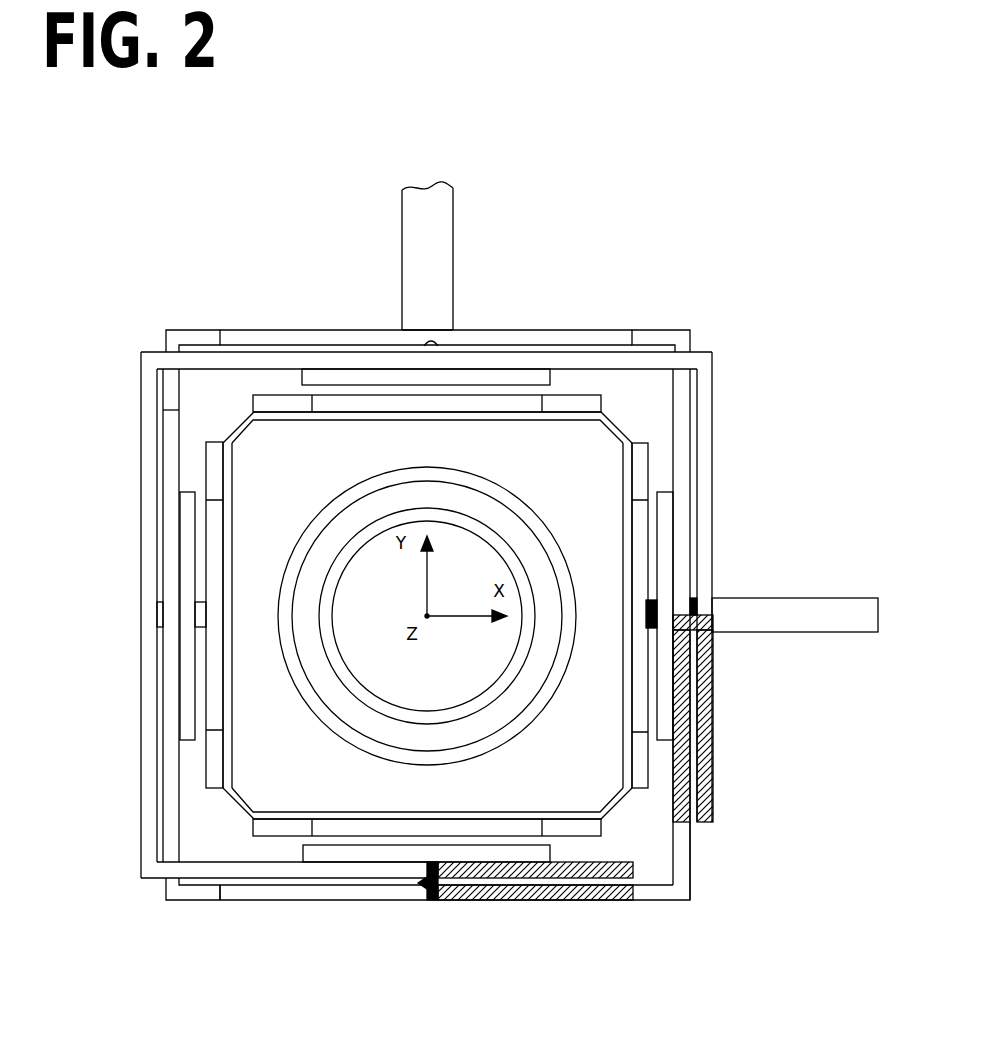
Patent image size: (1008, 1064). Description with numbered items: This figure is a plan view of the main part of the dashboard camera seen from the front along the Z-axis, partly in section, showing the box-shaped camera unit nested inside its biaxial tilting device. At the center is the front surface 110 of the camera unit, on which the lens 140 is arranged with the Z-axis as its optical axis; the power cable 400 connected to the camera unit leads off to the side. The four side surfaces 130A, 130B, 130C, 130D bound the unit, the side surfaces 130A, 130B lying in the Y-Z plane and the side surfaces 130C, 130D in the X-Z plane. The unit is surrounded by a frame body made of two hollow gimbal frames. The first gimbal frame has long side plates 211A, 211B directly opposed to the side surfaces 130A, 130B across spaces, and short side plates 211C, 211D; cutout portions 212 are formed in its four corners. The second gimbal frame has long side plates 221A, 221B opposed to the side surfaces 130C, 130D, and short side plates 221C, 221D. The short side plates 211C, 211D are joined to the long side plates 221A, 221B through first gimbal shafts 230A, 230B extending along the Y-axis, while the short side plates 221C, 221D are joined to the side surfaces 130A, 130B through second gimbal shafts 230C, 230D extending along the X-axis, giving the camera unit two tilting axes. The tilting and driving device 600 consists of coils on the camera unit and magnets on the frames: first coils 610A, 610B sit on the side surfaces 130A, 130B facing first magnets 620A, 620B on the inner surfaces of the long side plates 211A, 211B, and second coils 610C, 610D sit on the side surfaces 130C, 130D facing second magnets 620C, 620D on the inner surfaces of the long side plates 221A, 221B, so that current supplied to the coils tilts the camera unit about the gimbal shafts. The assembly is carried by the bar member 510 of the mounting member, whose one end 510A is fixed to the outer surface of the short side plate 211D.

The front surface 110 is at (675, 428).
The side surface 130A is at (223, 487).
The side surface 130B is at (630, 565).
The side surface 130C is at (318, 815).
The side surface 130D is at (470, 416).
The lens 140 is at (445, 684).
The long side plate 211A is at (167, 793).
The long side plate 211B is at (683, 477).
The short side plate 211C is at (335, 893).
The short side plate 211D is at (578, 337).
The cutout portion 212 is at (663, 333).
The long side plate 221A is at (263, 870).
The long side plate 221B is at (248, 357).
The short side plate 221C is at (150, 678).
The short side plate 221D is at (707, 455).
The first gimbal shaft 230A is at (432, 902).
The first gimbal shaft 230B is at (432, 347).
The second gimbal shaft 230C is at (162, 613).
The second gimbal shaft 230D is at (705, 626).
The power cable 400 is at (852, 634).
The bar member 510 is at (394, 210).
The one end 510A is at (447, 322).
The tilting and driving device 600 is at (236, 388).
The first coil 610A is at (218, 592).
The first coil 610B is at (647, 690).
The second coil 610C is at (486, 828).
The second coil 610D is at (373, 403).
The first magnet 620A is at (190, 567).
The first magnet 620B is at (665, 552).
The second magnet 620C is at (528, 860).
The second magnet 620D is at (348, 378).